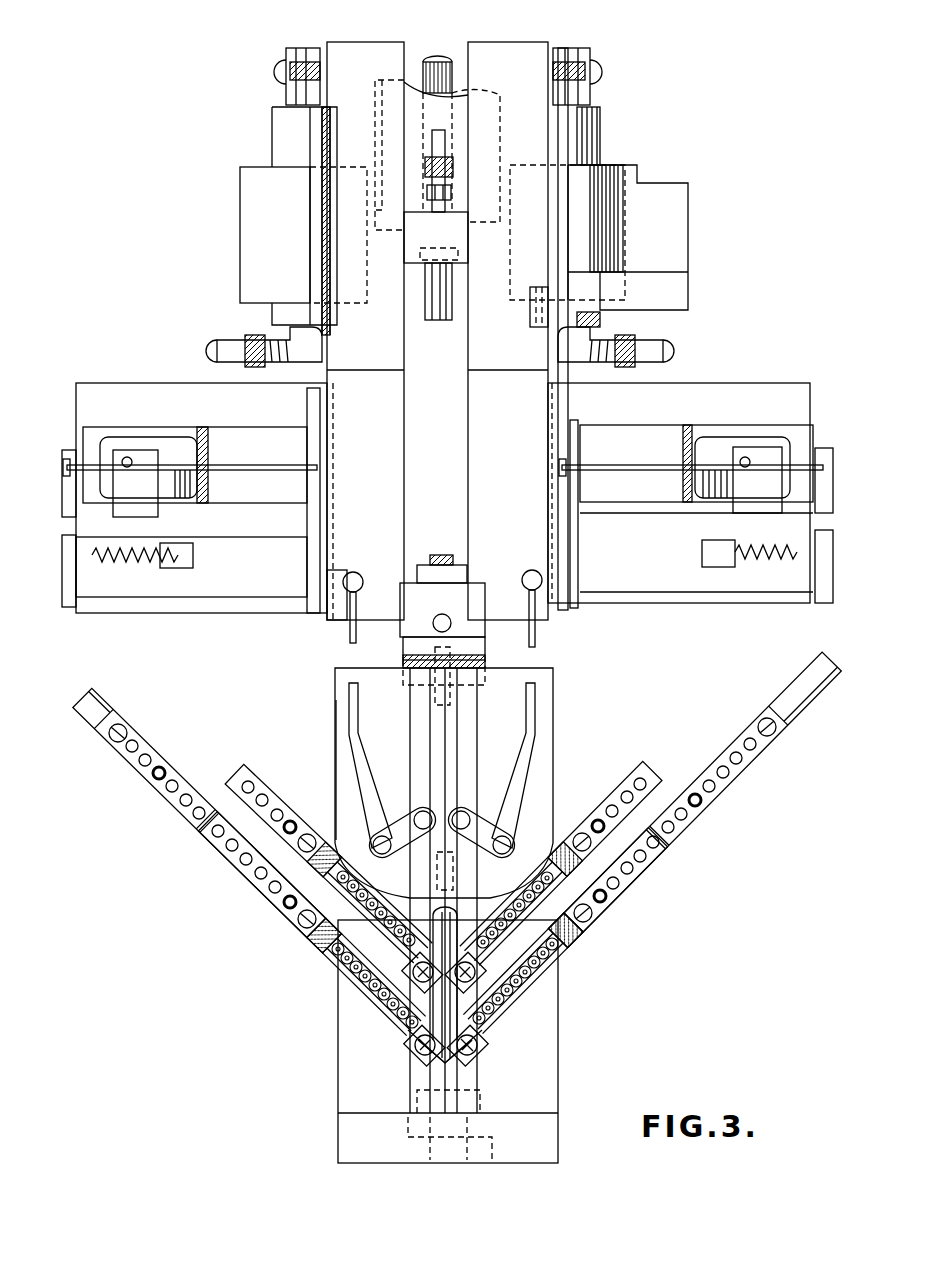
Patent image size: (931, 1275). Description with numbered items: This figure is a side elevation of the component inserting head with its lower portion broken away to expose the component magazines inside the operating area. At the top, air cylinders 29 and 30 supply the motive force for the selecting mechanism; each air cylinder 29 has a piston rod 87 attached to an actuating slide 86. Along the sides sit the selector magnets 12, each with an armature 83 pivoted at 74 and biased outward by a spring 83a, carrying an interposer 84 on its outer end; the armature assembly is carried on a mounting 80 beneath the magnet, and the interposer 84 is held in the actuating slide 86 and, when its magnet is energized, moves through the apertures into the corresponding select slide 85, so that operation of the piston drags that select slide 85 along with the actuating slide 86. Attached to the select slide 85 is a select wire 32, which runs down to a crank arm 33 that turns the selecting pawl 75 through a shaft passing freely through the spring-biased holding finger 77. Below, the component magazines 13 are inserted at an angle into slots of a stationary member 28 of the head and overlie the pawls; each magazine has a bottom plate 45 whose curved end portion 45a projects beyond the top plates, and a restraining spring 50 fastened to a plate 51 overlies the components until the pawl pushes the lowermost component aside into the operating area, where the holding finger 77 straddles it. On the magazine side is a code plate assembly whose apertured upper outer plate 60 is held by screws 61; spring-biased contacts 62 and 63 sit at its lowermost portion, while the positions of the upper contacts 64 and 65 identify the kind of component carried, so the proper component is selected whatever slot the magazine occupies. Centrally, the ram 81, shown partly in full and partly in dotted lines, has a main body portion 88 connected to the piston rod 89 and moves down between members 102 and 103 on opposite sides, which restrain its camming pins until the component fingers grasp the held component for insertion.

The selector magnets 12 is at (150, 437).
The component magazine 13 is at (752, 775).
The stationary member 28 is at (335, 796).
The air cylinder 29 is at (240, 201).
The air cylinder 30 is at (462, 74).
The select wire 32 is at (553, 716).
The crank arm 33 is at (488, 815).
The bottom plate 45 is at (572, 942).
The curved end portion 45a is at (488, 1049).
The spring 50 is at (518, 996).
The plate 51 is at (555, 966).
The upper outer plate 60 is at (247, 888).
The screw 61 is at (300, 921).
The spring-biased contact 62 is at (608, 901).
The spring-biased contact 63 is at (284, 906).
The contact 64 is at (703, 806).
The contact 65 is at (249, 861).
The armature pivot 74 is at (248, 427).
The selecting pawl 75 is at (405, 1050).
The holding finger 77 is at (428, 1062).
The bracket 80 is at (132, 517).
The ram 81 is at (492, 646).
The armature 83 is at (80, 584).
The spring 83a is at (165, 568).
The interposer 84 is at (255, 465).
The select slide 85 is at (357, 572).
The actuating slide 86 is at (316, 256).
The piston rod 87 is at (286, 93).
The main body portion 88 is at (455, 869).
The piston rod 89 is at (441, 322).
The member 102 is at (432, 750).
The member 103 is at (452, 750).